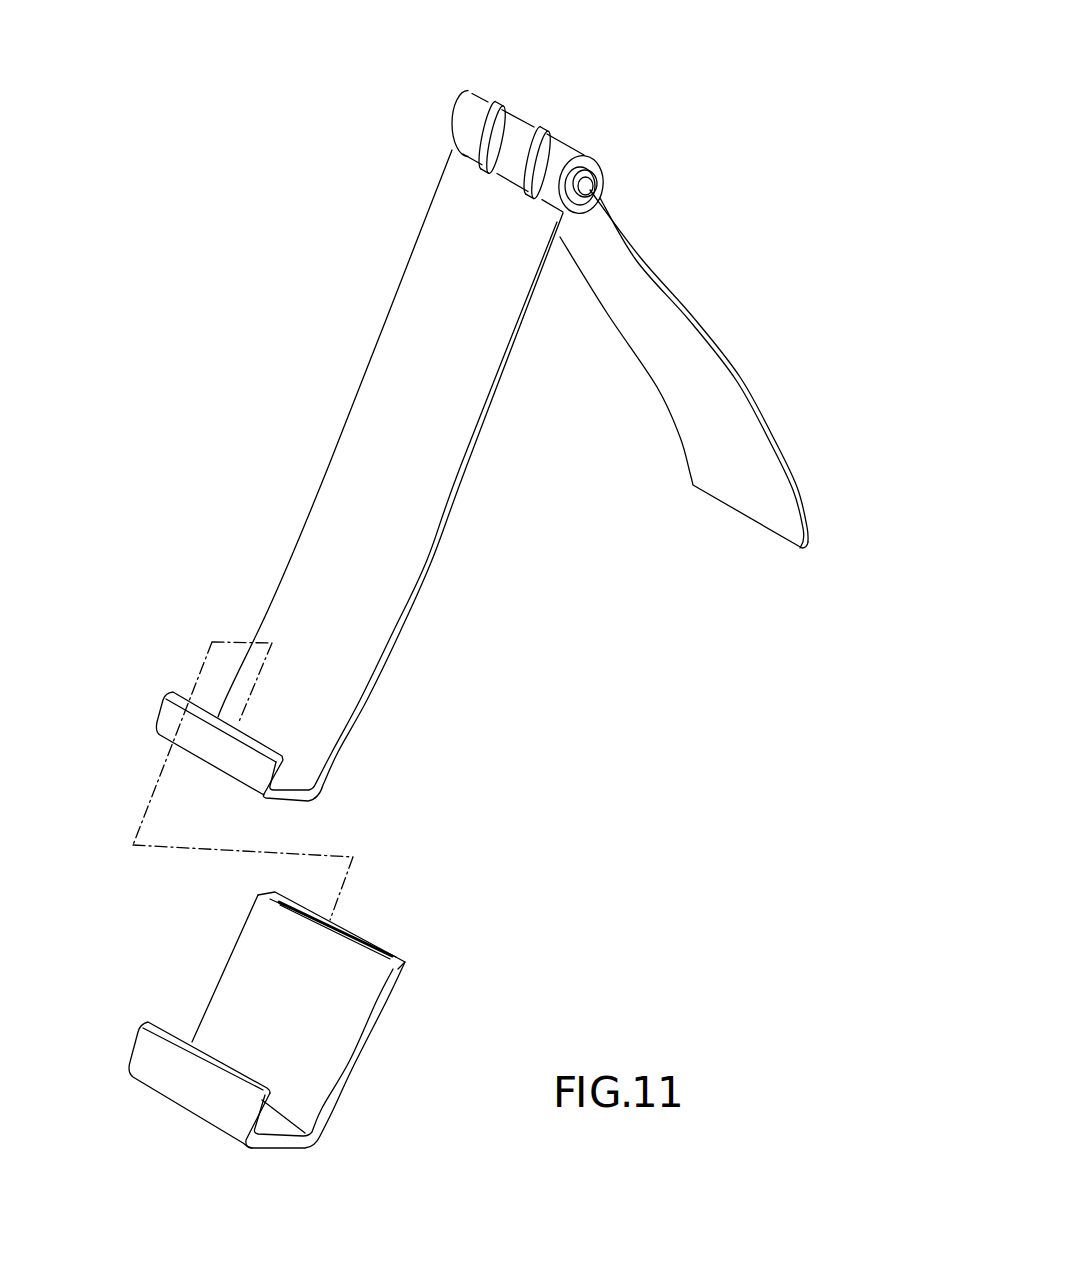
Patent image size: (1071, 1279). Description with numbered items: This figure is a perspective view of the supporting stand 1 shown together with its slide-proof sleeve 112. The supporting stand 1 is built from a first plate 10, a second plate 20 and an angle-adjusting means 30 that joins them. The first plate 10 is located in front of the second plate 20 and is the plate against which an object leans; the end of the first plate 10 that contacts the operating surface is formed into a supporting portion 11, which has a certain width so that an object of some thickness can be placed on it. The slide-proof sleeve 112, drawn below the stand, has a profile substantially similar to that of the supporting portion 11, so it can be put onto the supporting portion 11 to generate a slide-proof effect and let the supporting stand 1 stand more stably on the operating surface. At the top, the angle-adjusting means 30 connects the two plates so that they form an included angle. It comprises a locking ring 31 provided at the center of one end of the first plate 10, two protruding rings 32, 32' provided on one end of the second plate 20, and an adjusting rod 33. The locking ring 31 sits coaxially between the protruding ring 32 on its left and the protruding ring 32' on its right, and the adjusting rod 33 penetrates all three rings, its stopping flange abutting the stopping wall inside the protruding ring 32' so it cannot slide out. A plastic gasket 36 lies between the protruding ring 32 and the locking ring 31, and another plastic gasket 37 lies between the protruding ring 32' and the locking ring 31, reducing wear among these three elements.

The supporting stand 1 is at (788, 48).
The first plate 10 is at (432, 564).
The supporting portion 11 is at (172, 717).
The slide-proof sleeve 112 is at (360, 1063).
The second plate 20 is at (692, 325).
The angle-adjusting means 30 is at (483, 88).
The locking ring 31 is at (503, 143).
The protruding ring 32 is at (426, 117).
The protruding ring 32' is at (607, 155).
The adjusting rod 33 is at (587, 192).
The plastic gasket 36 is at (500, 110).
The plastic gasket 37 is at (543, 137).